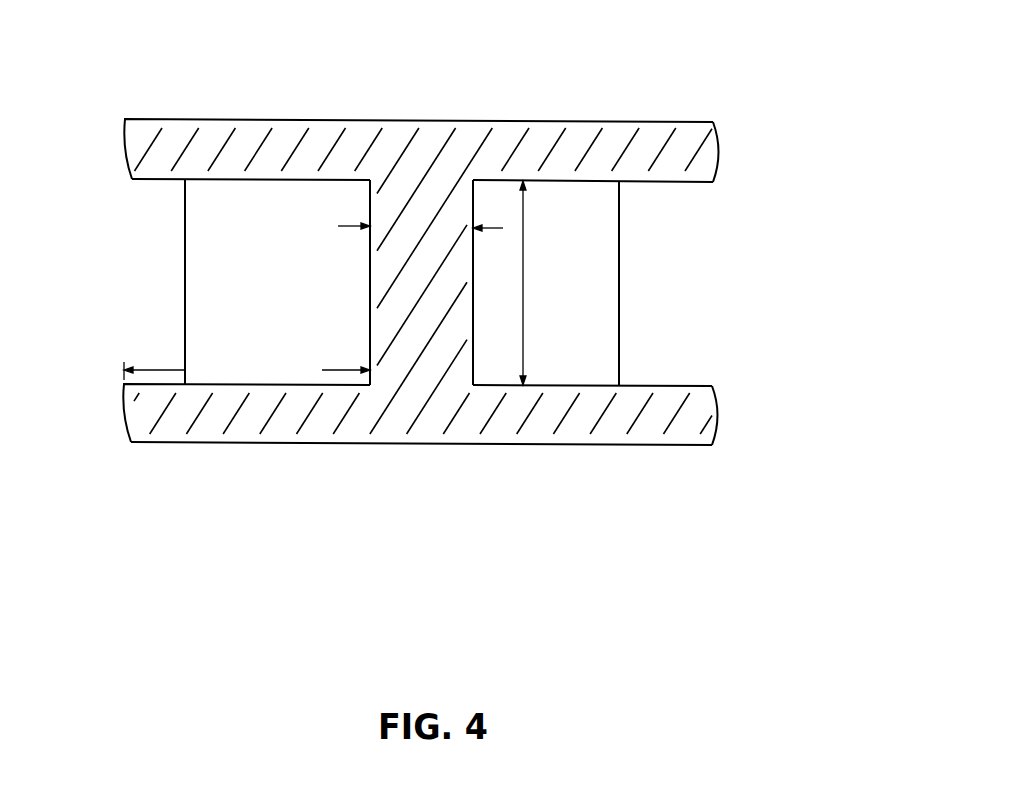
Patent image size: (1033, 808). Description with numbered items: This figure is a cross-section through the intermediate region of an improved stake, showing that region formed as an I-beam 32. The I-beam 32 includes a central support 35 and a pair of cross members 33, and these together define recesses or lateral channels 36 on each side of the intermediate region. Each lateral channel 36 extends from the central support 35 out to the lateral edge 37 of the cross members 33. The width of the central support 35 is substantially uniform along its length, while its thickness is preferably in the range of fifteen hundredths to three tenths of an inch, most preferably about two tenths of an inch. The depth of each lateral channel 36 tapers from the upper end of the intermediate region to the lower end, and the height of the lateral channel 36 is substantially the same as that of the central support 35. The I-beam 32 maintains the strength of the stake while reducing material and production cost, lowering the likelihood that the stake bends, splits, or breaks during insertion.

The I-beam 32 is at (473, 284).
The cross members 33 is at (658, 121).
The central support 35 is at (473, 343).
The lateral channels 36 is at (185, 293).
The lateral edge 37 is at (715, 181).